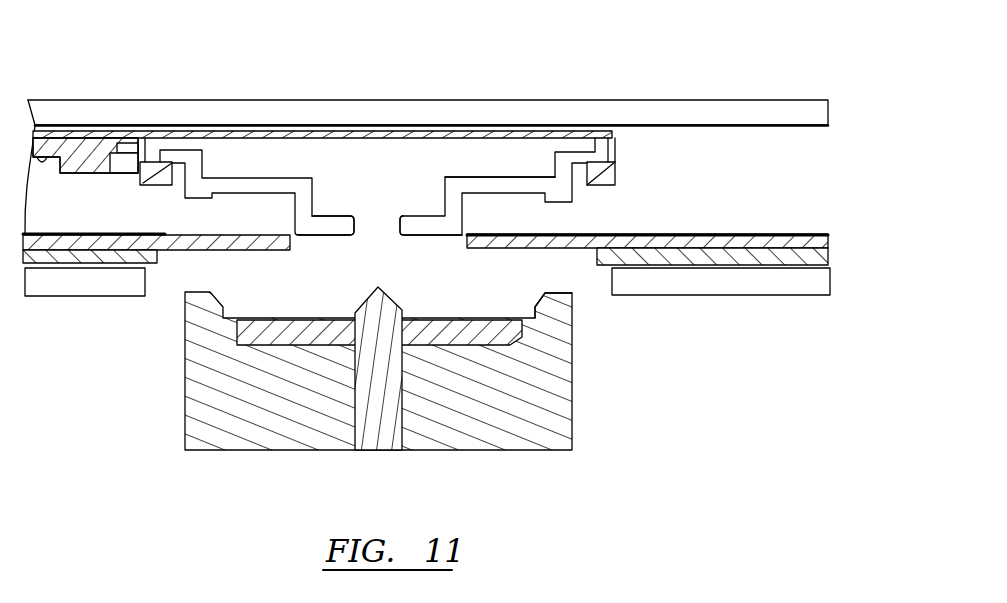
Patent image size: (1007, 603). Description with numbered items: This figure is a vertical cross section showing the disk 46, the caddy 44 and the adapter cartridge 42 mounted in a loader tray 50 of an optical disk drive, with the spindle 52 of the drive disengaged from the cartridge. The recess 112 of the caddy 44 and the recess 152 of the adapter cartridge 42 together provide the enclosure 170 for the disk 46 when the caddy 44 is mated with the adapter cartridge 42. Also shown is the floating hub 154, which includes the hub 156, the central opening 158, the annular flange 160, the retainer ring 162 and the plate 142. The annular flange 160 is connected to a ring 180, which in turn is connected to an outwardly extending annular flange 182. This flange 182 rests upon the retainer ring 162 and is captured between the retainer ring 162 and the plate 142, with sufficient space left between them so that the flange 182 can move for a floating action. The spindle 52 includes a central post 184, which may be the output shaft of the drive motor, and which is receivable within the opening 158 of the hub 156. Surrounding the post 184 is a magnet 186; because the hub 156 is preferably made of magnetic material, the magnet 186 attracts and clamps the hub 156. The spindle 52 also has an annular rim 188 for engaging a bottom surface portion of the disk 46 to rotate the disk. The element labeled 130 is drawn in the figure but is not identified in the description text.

The adapter cartridge 42 is at (92, 130).
The caddy 44 is at (152, 265).
The disk 46 is at (542, 248).
The loader tray 50 is at (798, 110).
The spindle 52 is at (575, 428).
The recess of the caddy 112 is at (93, 245).
The mounting block 130 is at (36, 152).
The plate 142 is at (322, 133).
The recess of the adapter cartridge 152 is at (45, 157).
The floating hub 154 is at (385, 157).
The hub 156 is at (407, 233).
The central opening 158 is at (354, 216).
The annular flange 160 is at (475, 197).
The retainer ring 162 is at (613, 181).
The enclosure 170 is at (790, 198).
The ring 180 is at (555, 187).
The outwardly extending annular flange 182 is at (576, 150).
The central post 184 is at (383, 288).
The magnet 186 is at (478, 338).
The annular rim 188 is at (562, 292).